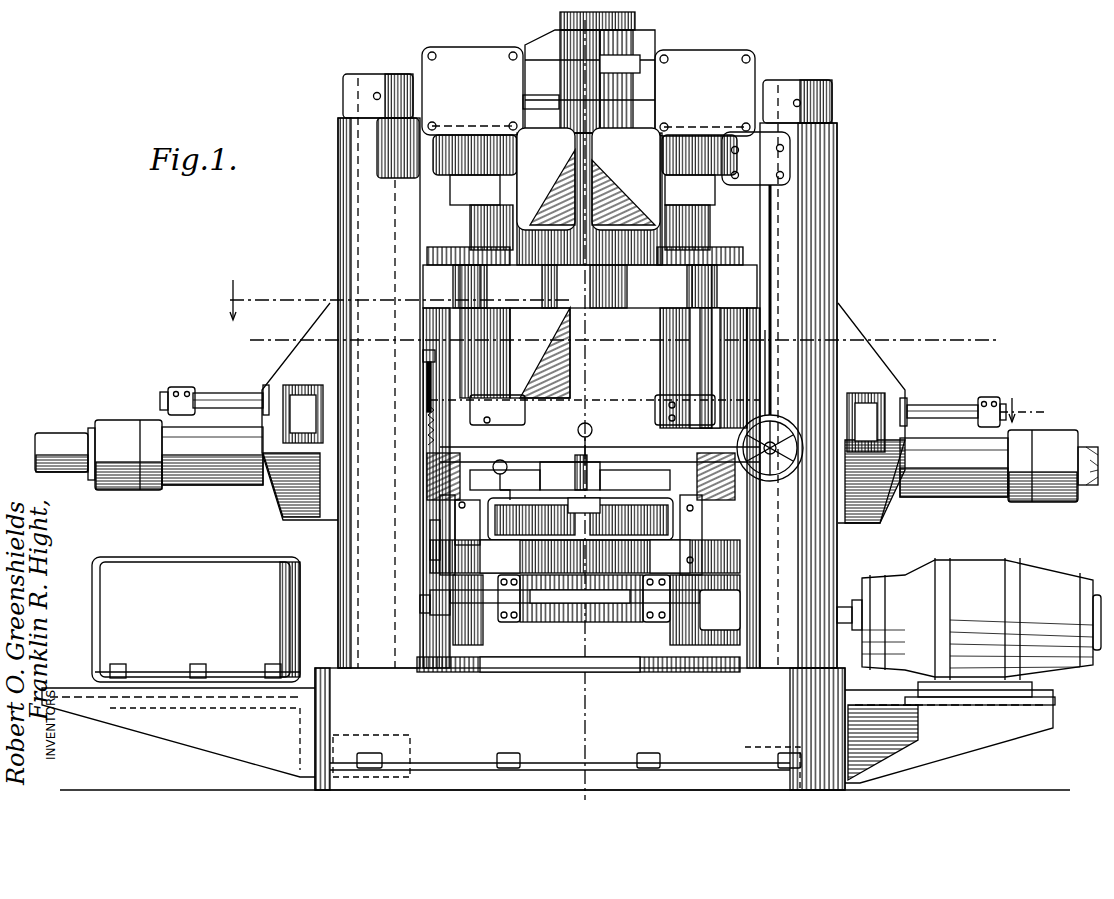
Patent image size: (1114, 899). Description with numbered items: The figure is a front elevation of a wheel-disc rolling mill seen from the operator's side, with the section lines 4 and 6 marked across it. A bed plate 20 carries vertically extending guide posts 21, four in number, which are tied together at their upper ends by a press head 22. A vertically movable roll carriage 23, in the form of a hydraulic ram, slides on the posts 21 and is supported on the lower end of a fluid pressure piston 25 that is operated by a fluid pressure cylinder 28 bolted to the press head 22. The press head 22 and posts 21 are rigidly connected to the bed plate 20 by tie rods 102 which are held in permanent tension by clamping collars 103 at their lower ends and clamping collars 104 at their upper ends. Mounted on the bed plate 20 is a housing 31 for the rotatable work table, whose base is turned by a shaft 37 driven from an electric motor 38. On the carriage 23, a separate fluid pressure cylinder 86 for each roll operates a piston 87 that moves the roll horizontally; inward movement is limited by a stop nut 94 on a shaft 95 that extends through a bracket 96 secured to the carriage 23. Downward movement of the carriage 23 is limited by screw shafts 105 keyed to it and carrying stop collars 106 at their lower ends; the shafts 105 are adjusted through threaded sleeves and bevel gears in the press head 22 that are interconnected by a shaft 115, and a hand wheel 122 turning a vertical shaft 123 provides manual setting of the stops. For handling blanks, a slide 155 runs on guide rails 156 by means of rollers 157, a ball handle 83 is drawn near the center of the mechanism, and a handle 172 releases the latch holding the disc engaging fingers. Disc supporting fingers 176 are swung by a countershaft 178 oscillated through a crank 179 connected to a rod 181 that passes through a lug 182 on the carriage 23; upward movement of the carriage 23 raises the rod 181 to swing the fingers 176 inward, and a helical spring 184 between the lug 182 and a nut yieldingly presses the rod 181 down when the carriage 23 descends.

The section line 4 is at (595, 15).
The section line 6 is at (230, 291).
The bed plate 20 is at (835, 695).
The guide posts 21 is at (337, 540).
The press head 22 is at (822, 210).
The roll carriage 23 is at (646, 312).
The fluid pressure piston 25 is at (628, 290).
The fluid pressure cylinder 28 is at (640, 83).
The housing 31 is at (548, 648).
The shaft 37 is at (58, 434).
The electric motor 38 is at (1030, 572).
The ball handle 83 is at (570, 450).
The fluid pressure cylinder 86 is at (218, 465).
The piston 87 is at (1090, 490).
The stop nut 94 is at (172, 385).
The shaft 95 is at (222, 395).
The bracket 96 is at (296, 348).
The tie rods 102 is at (395, 702).
The clamping collars 103 is at (300, 745).
The clamping collars 104 is at (352, 90).
The screw shafts 105 is at (478, 287).
The stop collars 106 is at (470, 390).
The shaft 115 is at (540, 98).
The hand wheel 122 is at (777, 410).
The vertical shaft 123 is at (768, 357).
The slide 155 is at (640, 452).
The guide rails 156 is at (440, 530).
The rollers 157 is at (455, 515).
The handle 172 is at (593, 436).
The disc supporting fingers 176 is at (540, 525).
The countershaft 178 is at (568, 603).
The crank 179 is at (435, 615).
The rod 181 is at (430, 548).
The lug 182 is at (424, 390).
The helical spring 184 is at (425, 420).